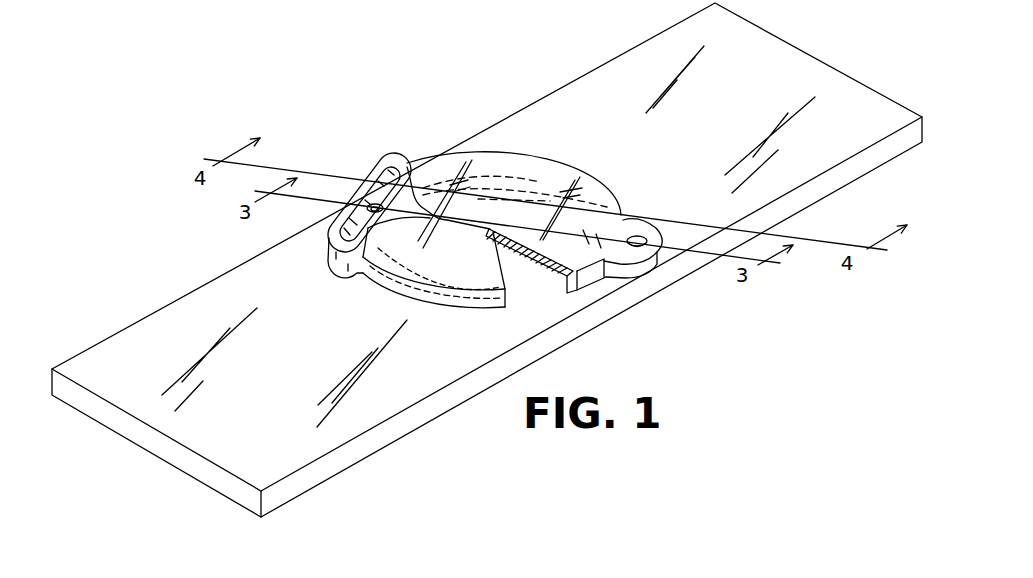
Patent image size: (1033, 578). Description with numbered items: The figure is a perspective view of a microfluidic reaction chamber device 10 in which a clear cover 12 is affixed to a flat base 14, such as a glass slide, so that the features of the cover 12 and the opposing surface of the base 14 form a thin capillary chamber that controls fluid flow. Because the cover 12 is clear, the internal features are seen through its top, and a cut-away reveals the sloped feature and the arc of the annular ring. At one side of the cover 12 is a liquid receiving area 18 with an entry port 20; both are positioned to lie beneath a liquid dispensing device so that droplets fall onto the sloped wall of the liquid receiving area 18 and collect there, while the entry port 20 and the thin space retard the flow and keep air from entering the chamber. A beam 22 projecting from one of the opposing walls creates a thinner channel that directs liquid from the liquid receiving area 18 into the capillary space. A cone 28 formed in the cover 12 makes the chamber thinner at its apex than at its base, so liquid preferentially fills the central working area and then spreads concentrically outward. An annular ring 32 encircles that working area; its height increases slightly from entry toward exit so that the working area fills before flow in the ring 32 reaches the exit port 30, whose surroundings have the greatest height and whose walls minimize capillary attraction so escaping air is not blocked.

The reaction chamber device 10 is at (467, 103).
The cover 12 is at (594, 158).
The base 14 is at (362, 423).
The liquid receiving area 18 is at (388, 163).
The entry port 20 is at (365, 273).
The beam 22 is at (455, 229).
The cone 28 is at (539, 262).
The exit port 30 is at (634, 248).
The ring 32 is at (547, 180).